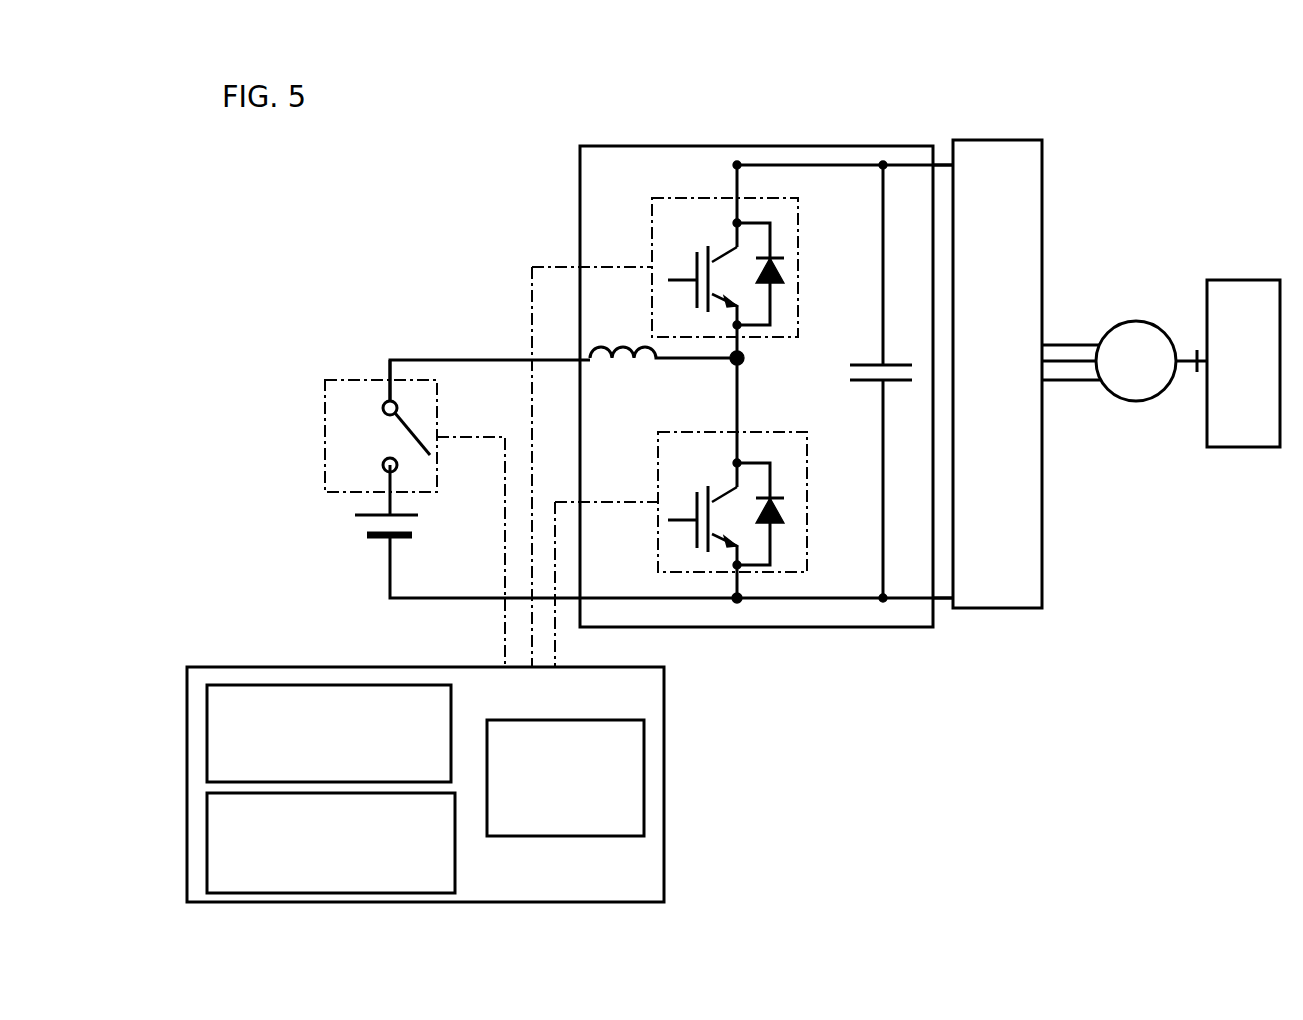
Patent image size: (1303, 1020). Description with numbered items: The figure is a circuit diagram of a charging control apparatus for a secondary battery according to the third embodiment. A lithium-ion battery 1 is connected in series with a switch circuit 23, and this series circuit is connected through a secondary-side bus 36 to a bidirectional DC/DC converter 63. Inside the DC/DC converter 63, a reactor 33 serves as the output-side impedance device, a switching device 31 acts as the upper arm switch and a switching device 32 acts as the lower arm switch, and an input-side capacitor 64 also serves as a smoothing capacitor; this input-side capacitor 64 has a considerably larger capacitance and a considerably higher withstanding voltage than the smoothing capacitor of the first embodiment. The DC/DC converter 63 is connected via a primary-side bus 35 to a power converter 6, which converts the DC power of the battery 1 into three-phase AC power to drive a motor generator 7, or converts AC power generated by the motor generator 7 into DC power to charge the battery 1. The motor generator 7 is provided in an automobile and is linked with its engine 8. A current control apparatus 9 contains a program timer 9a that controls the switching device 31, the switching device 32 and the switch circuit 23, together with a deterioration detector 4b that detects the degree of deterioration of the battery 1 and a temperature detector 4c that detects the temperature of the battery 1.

The battery 1 is at (410, 538).
The switch circuit 23 is at (357, 408).
The secondary-side bus 36 is at (440, 358).
The reactor 33 is at (600, 345).
The DC/DC converter 63 is at (793, 146).
The switching device 31 is at (718, 205).
The switching device 32 is at (698, 555).
The input-side capacitor 64 is at (864, 395).
The primary-side bus 35 is at (940, 160).
The power converter 6 is at (1043, 210).
The motor generator 7 is at (1128, 322).
The engine 8 is at (1245, 280).
The current control apparatus 9 is at (293, 667).
The program timer 9a is at (645, 769).
The deterioration detector 4b is at (204, 731).
The temperature detector 4c is at (209, 842).